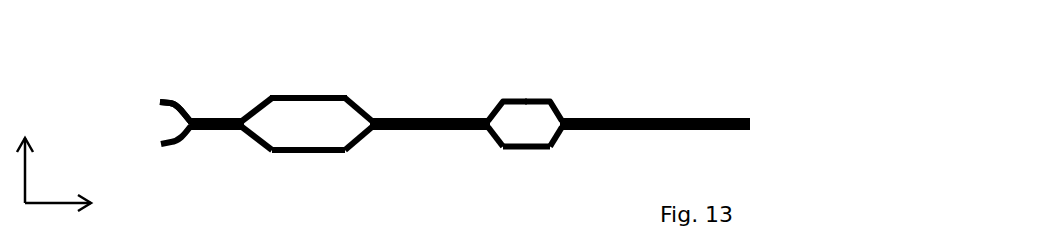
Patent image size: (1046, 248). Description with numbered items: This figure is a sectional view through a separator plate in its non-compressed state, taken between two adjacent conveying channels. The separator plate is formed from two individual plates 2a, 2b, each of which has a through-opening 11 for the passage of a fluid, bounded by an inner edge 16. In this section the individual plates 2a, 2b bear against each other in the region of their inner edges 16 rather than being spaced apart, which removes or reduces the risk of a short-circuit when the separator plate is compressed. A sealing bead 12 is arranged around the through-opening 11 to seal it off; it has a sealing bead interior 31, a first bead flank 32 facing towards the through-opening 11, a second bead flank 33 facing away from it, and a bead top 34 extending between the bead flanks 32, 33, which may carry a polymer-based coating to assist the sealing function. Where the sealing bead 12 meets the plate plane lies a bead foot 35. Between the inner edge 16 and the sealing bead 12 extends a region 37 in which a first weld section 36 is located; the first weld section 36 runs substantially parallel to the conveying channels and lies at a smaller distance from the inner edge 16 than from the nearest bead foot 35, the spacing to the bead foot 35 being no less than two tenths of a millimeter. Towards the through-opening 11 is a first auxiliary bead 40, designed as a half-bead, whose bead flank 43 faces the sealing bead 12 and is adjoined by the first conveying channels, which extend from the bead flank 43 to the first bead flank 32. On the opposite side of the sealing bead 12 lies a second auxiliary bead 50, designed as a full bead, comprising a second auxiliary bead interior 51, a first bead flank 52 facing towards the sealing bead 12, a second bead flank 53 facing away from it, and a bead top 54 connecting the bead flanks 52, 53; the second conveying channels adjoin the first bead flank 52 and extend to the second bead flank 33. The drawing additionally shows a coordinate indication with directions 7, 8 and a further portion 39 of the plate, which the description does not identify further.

The through-opening 11 is at (116, 125).
The inner edge 16 is at (163, 102).
The first auxiliary bead 40 is at (165, 100).
The bead flank 43 is at (175, 112).
The region 37 is at (227, 119).
The first weld section 36 is at (200, 134).
The bead foot 35 is at (238, 134).
The sealing bead interior 31 is at (318, 136).
The first bead flank 32 is at (260, 105).
The bead top 34 is at (295, 95).
The sealing bead 12 is at (323, 95).
The second bead flank 33 is at (357, 102).
The second auxiliary bead interior 51 is at (534, 135).
The bead top 54 is at (510, 98).
The second auxiliary bead 50 is at (532, 98).
The first bead flank 52 is at (493, 137).
The second bead flank 53 is at (555, 137).
The output waveguide 39 is at (622, 125).
The individual plate 2a is at (743, 118).
The individual plate 2b is at (743, 128).
The z-axis direction 7 is at (23, 158).
The x-axis direction 8 is at (42, 206).